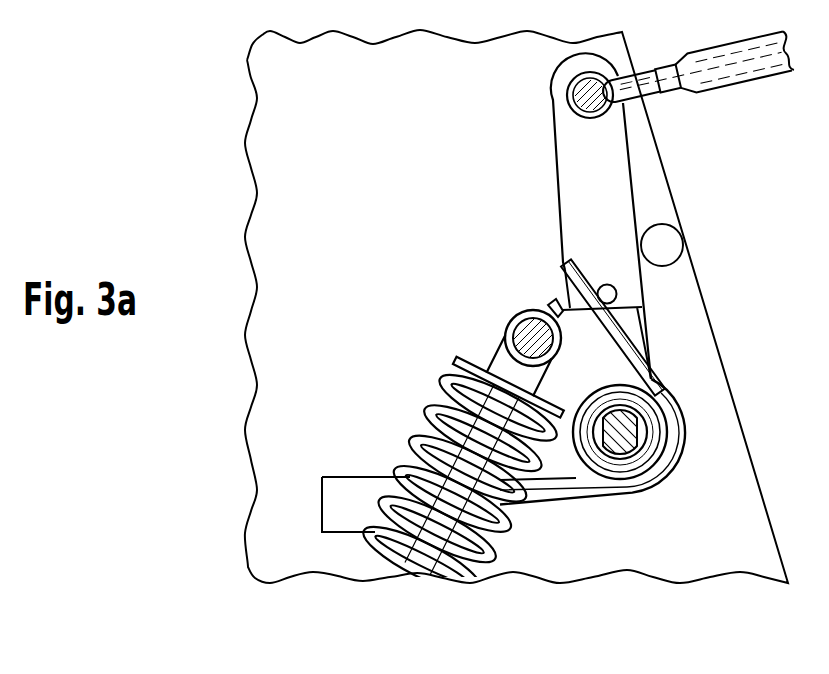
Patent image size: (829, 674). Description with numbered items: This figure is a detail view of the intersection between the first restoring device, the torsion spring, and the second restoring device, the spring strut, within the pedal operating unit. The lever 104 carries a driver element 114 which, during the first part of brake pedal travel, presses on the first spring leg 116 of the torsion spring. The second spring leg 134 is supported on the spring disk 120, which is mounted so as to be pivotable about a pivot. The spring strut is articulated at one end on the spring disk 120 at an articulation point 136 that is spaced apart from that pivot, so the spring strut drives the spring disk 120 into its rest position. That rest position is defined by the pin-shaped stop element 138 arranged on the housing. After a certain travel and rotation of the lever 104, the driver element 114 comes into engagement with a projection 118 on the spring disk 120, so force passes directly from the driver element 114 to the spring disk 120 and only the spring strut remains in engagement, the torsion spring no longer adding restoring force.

The lever 104 is at (608, 182).
The driver element 114 is at (617, 290).
The first spring leg 116 is at (607, 328).
The projection 118 is at (553, 300).
The spring disk 120 is at (580, 360).
The second spring leg 134 is at (553, 485).
The articulation point 136 is at (530, 336).
The stop element 138 is at (660, 245).